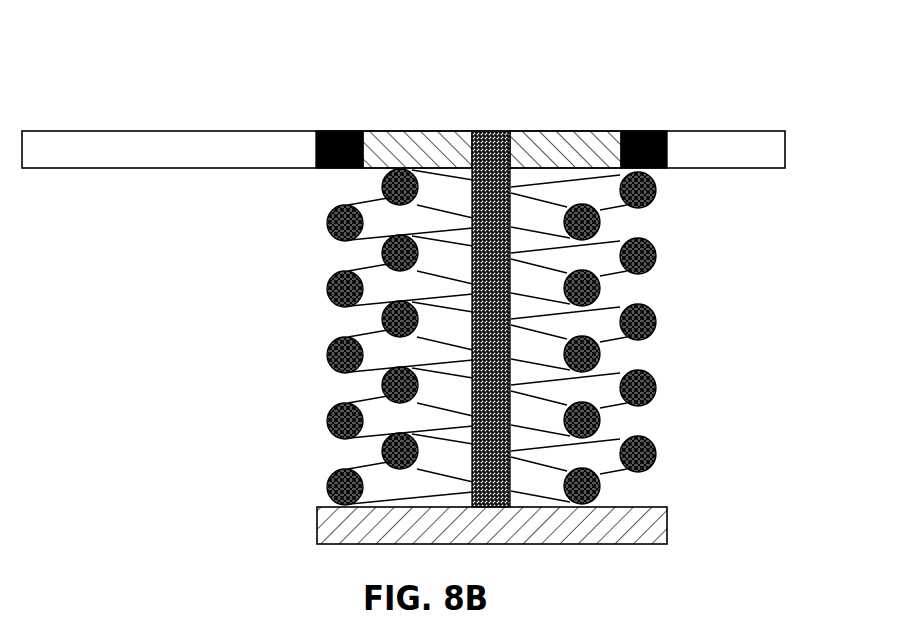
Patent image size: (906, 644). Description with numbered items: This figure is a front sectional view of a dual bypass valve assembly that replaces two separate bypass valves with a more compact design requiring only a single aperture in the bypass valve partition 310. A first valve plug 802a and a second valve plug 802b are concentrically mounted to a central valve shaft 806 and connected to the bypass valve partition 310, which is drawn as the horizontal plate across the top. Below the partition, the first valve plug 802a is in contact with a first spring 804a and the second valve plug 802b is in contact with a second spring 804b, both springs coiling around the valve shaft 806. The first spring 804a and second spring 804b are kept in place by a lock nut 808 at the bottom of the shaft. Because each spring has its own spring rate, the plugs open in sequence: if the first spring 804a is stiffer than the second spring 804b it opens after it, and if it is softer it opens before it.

The bypass valve partition 310 is at (191, 131).
The first valve plug 802a is at (404, 131).
The second valve plug 802b is at (335, 131).
The first spring 804a is at (600, 224).
The second spring 804b is at (656, 188).
The valve shaft 806 is at (492, 131).
The lock nut 808 is at (667, 518).